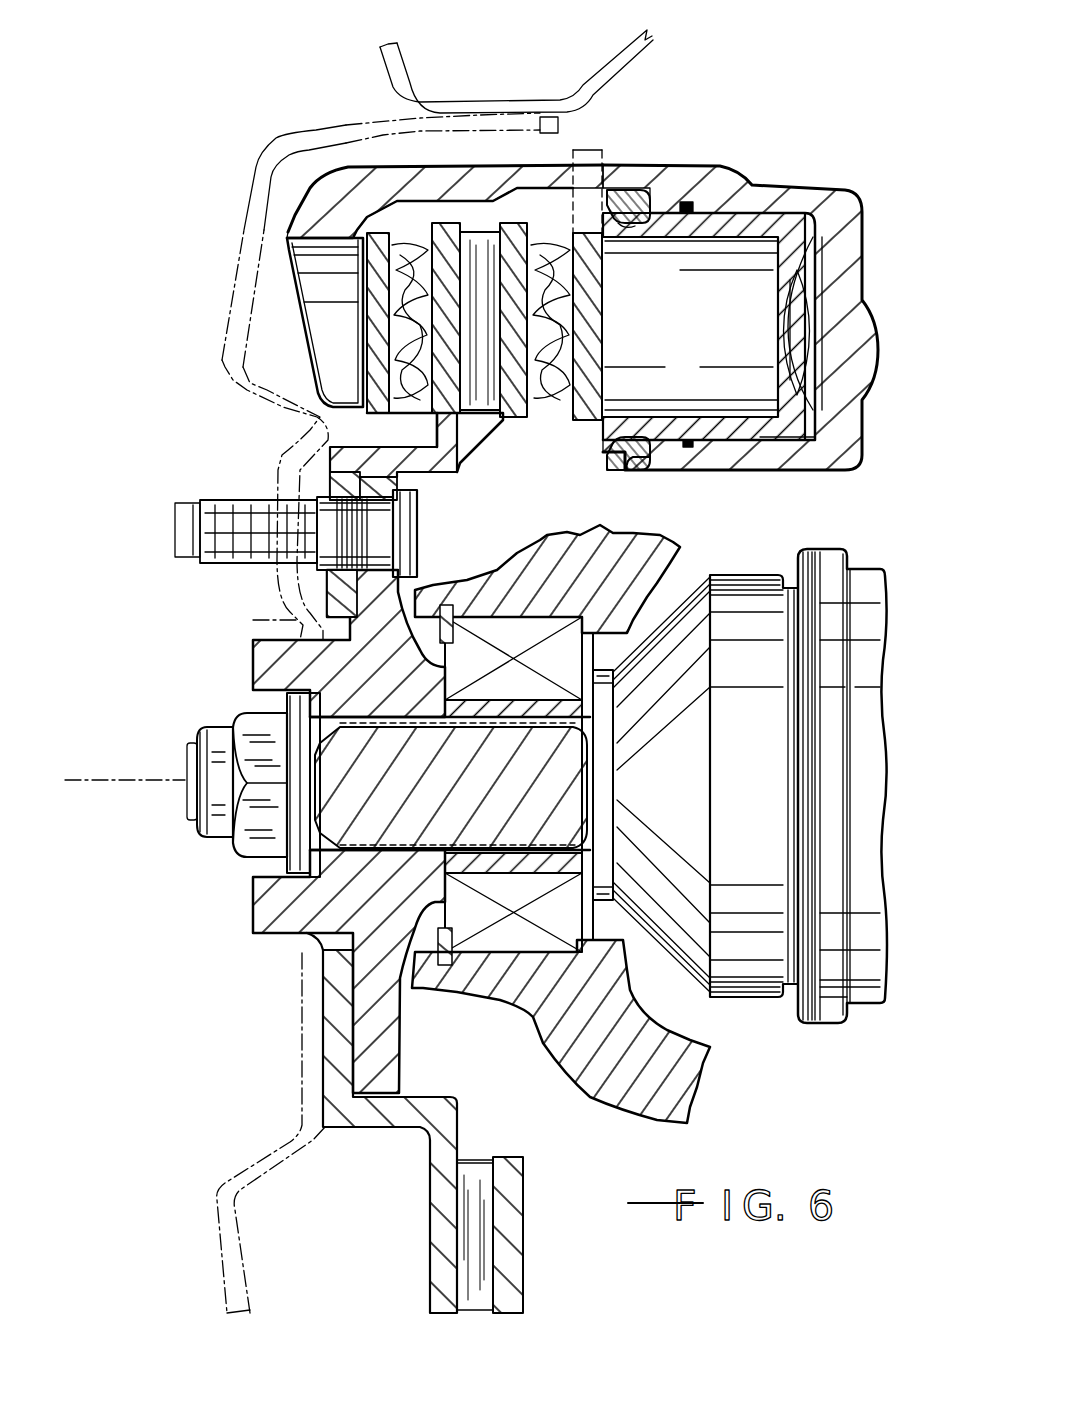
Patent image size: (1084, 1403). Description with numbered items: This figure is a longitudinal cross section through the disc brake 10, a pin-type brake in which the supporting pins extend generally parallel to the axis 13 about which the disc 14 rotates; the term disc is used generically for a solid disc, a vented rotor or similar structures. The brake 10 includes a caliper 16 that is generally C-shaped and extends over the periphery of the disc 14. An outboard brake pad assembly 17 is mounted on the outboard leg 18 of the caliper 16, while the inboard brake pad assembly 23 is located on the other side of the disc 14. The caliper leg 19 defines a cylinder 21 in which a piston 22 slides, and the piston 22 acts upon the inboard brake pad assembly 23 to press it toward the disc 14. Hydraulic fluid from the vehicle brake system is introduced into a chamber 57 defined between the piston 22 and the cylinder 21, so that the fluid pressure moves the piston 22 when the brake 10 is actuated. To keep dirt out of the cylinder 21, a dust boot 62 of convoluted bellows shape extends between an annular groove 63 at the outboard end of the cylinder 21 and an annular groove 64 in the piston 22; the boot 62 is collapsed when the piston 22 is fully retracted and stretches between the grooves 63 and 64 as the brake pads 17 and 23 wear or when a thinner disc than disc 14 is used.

The disc brake 10 is at (801, 174).
The axis 13 is at (147, 783).
The disc 14 is at (503, 420).
The caliper 16 is at (697, 163).
The outboard brake pad assembly 17 is at (388, 416).
The outboard leg 18 is at (307, 347).
The inboard leg 19 is at (840, 193).
The cylinder 21 is at (760, 433).
The piston 22 is at (713, 427).
The inboard brake pad assembly 23 is at (578, 427).
The chamber 57 is at (810, 297).
The dust boot 62 is at (613, 443).
The annular groove 63 is at (655, 457).
The annular groove 64 is at (643, 437).